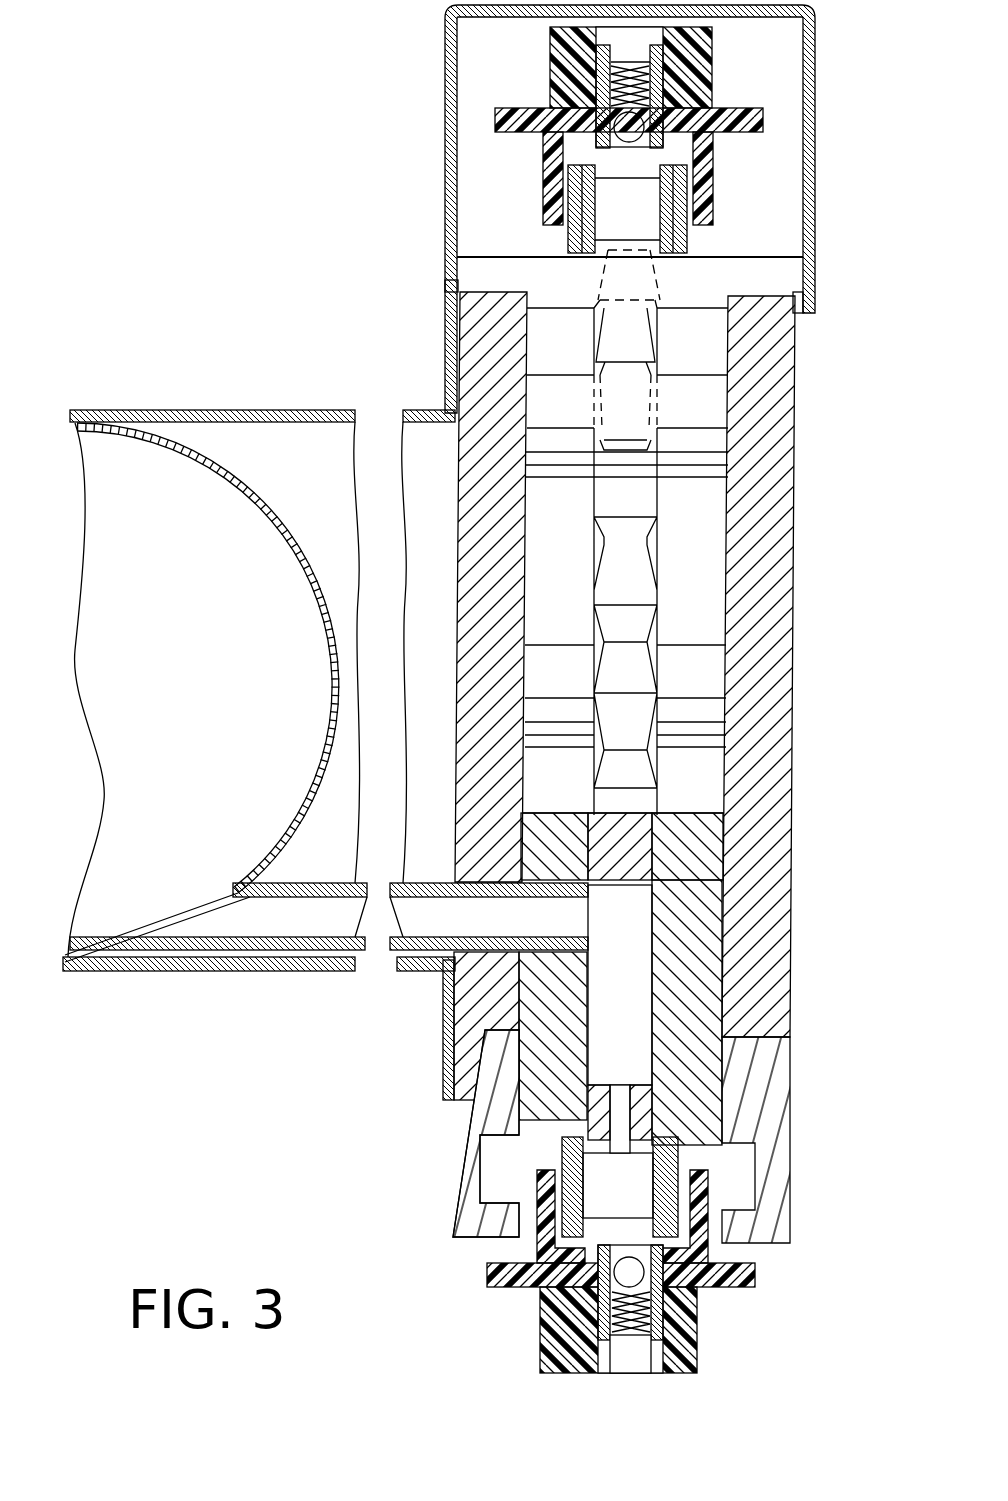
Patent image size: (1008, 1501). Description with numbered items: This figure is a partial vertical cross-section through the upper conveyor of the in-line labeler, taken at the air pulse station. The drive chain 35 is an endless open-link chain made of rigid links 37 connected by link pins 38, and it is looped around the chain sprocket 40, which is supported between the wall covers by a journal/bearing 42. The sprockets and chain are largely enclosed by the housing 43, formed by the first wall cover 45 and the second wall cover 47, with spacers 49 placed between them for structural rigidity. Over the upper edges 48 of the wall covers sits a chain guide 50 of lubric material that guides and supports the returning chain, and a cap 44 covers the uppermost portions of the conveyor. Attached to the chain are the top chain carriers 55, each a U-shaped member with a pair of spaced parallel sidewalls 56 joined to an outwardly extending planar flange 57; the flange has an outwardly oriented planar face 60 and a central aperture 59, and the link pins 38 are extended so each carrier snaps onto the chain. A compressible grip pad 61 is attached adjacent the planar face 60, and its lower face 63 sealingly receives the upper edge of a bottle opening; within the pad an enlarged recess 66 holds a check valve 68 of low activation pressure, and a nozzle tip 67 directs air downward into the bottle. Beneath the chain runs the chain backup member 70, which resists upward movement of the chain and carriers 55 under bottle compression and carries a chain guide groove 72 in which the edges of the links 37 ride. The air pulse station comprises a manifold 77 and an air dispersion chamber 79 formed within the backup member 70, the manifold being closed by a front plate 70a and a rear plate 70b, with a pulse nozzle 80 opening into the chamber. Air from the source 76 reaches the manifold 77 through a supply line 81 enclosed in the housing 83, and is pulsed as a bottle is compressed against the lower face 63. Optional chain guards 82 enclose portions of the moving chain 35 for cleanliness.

The drive chain 35 is at (705, 248).
The rigid link 37 is at (560, 247).
The link pin 38 is at (688, 1163).
The chain sprocket 40 is at (620, 503).
The journal/bearing 42 is at (708, 673).
The housing 43 is at (365, 193).
The cap 44 is at (820, 133).
The first wall cover 45 is at (490, 353).
The second wall cover 47 is at (790, 383).
The upper edge 48 is at (462, 292).
The spacer 49 is at (708, 393).
The chain guide 50 is at (778, 275).
The top chain carrier 55 is at (545, 659).
The sidewall 56 is at (537, 1203).
The planar flange 57 is at (738, 1278).
The aperture 59 is at (540, 1265).
The planar face 60 is at (738, 1295).
The grip pad 61 is at (599, 67).
The lower face 63 is at (658, 1378).
The recess 66 is at (698, 1313).
The nozzle tip 67 is at (562, 1359).
The check valve 68 is at (540, 1325).
The chain backup member 70 is at (643, 837).
The front plate 70a is at (540, 1013).
The rear plate 70b is at (688, 918).
The chain guide groove 72 is at (658, 1133).
The air pressure source 76 is at (148, 463).
The manifold 77 is at (728, 968).
The air dispersion chamber 79 is at (634, 987).
The pulse nozzle 80 is at (620, 1093).
The supply line 81 is at (240, 951).
The chain guard 82 is at (455, 1158).
The housing 83 is at (253, 412).